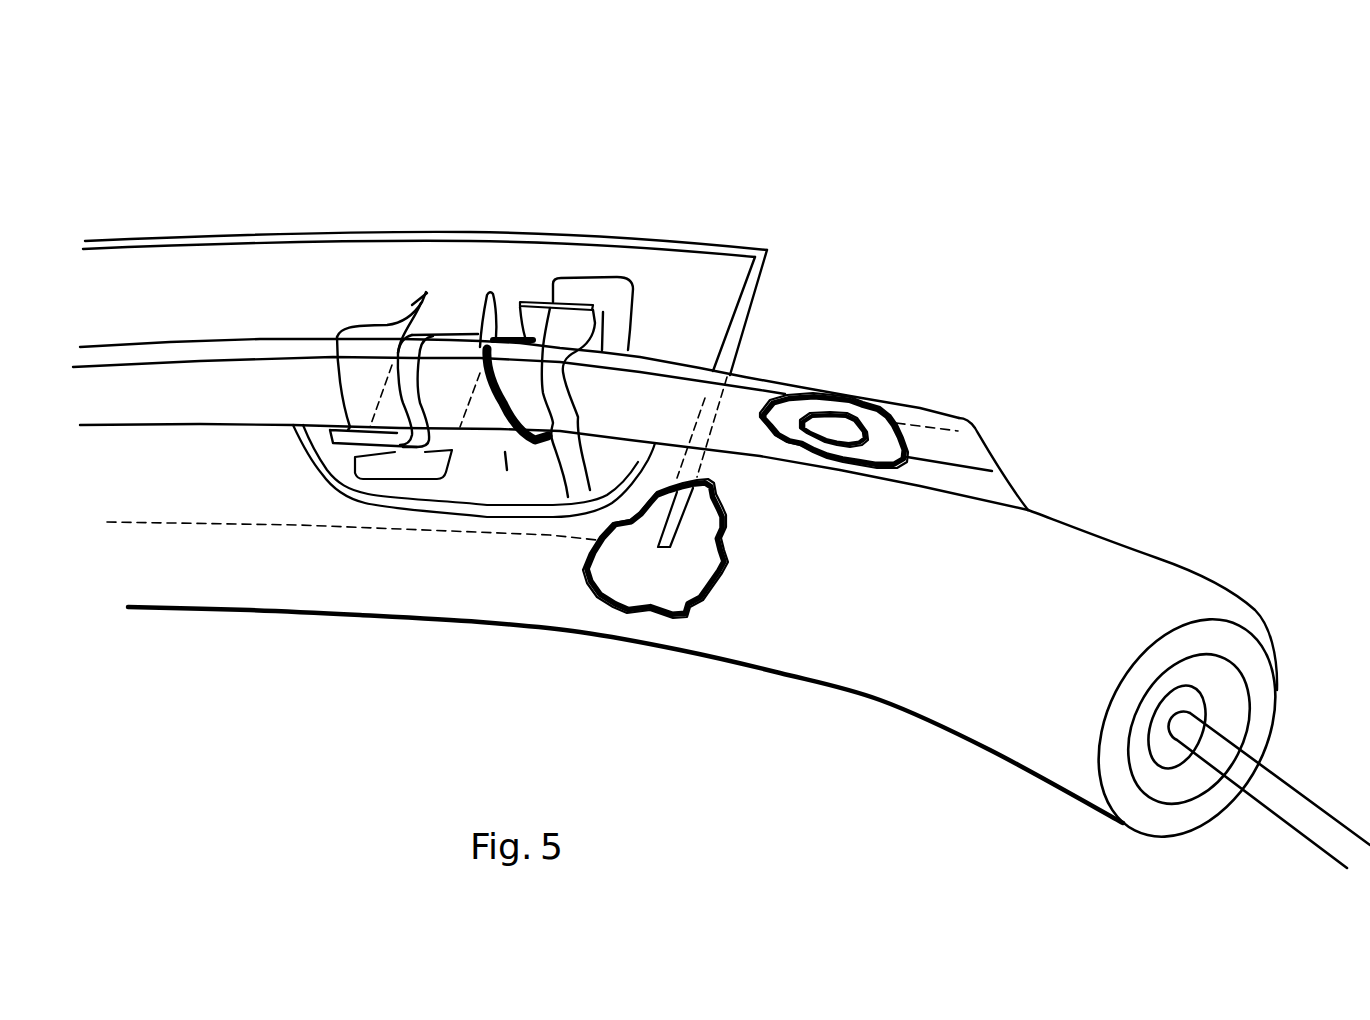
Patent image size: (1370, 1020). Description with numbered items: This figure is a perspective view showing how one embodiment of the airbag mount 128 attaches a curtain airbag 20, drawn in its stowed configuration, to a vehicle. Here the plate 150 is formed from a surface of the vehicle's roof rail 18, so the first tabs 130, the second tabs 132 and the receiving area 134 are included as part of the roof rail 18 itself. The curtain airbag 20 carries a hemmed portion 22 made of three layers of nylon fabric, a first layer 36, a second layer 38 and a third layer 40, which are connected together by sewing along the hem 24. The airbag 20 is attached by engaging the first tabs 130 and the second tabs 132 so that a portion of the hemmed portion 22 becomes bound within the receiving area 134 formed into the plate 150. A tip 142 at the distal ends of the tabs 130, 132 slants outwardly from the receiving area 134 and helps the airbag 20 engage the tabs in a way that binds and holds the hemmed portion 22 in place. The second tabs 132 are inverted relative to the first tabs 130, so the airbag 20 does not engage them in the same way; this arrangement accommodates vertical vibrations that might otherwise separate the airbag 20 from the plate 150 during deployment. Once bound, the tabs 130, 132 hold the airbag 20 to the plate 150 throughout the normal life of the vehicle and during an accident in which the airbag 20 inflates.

The roof rail 18 is at (712, 244).
The curtain airbag 20 is at (1210, 673).
The hemmed portion 22 is at (747, 382).
The hem 24 is at (813, 398).
The first layer 36 is at (979, 465).
The second layer 38 is at (863, 405).
The third layer 40 is at (852, 426).
The airbag mount 128 is at (230, 233).
The first tabs 130 is at (533, 463).
The second tabs 132 is at (428, 315).
The receiving area 134 is at (613, 293).
The tip 142 is at (567, 307).
The plate 150 is at (509, 288).